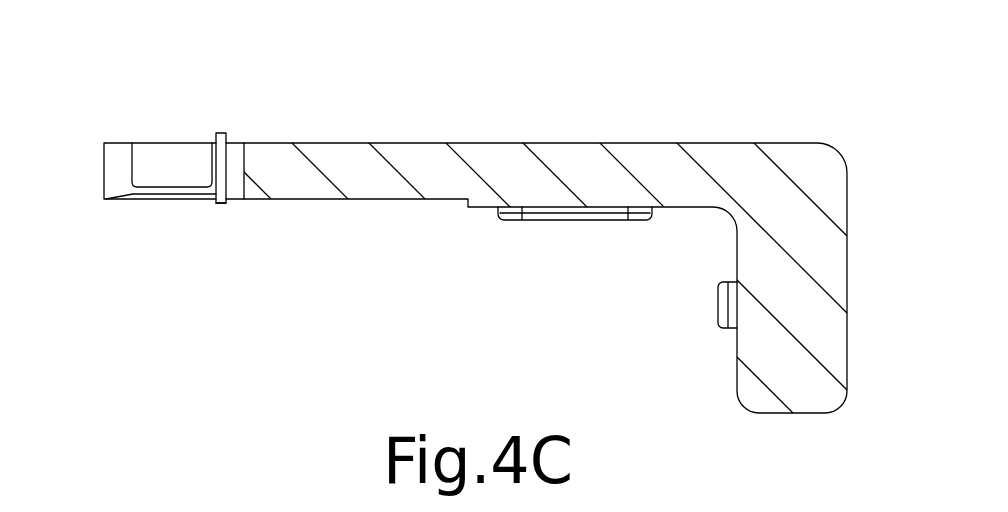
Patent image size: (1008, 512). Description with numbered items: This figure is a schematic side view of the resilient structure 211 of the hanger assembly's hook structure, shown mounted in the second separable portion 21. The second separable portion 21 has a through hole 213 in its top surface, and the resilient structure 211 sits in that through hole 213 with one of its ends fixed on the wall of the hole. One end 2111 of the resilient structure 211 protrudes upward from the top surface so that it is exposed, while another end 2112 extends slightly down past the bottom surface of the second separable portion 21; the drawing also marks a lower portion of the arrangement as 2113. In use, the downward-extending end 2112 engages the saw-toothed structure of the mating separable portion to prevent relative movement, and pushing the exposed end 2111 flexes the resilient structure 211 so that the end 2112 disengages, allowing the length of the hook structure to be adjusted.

The second separable portion 21 is at (813, 307).
The resilient structure 211 is at (193, 165).
The end of the resilient structure 2111 is at (220, 132).
The end of the resilient structure 2112 is at (226, 203).
The lower lip 2113 is at (137, 195).
The through hole 213 is at (180, 167).